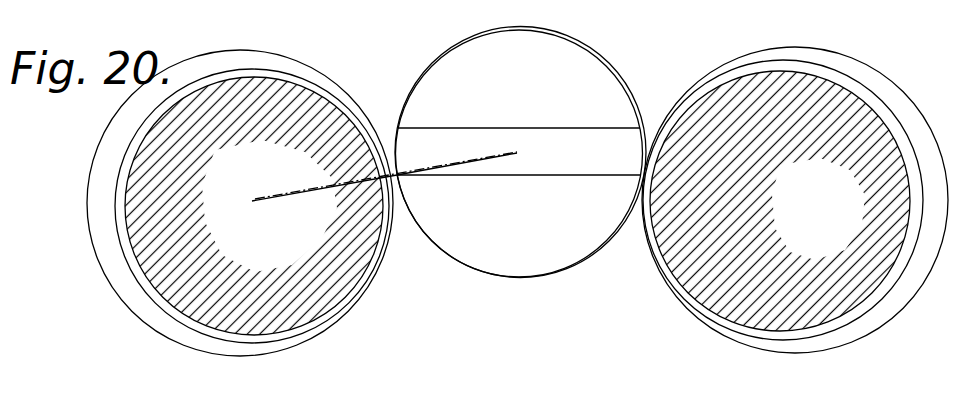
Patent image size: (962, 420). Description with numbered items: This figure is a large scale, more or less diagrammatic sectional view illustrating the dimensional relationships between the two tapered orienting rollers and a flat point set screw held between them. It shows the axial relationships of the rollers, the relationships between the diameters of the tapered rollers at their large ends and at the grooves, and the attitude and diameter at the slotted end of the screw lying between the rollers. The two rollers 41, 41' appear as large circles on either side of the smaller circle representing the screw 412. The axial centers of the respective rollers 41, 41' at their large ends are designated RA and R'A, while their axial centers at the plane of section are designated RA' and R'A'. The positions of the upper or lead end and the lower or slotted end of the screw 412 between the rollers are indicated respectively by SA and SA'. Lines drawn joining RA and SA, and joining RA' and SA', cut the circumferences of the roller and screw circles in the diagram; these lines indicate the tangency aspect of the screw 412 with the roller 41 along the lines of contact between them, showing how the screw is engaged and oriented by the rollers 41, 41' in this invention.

The roller 41 is at (209, 203).
The roller 41' is at (796, 200).
The screw 412 is at (597, 54).
The position of upper or lead end of screw SA is at (536, 126).
The position of lower or slotted end of screw SA' is at (550, 161).
The axial center of roller at large end RA is at (240, 184).
The axial center of roller at plane of section RA' is at (267, 227).
The axial center of roller at large end R'A is at (817, 190).
The axial center of roller at plane of section R'A' is at (787, 219).